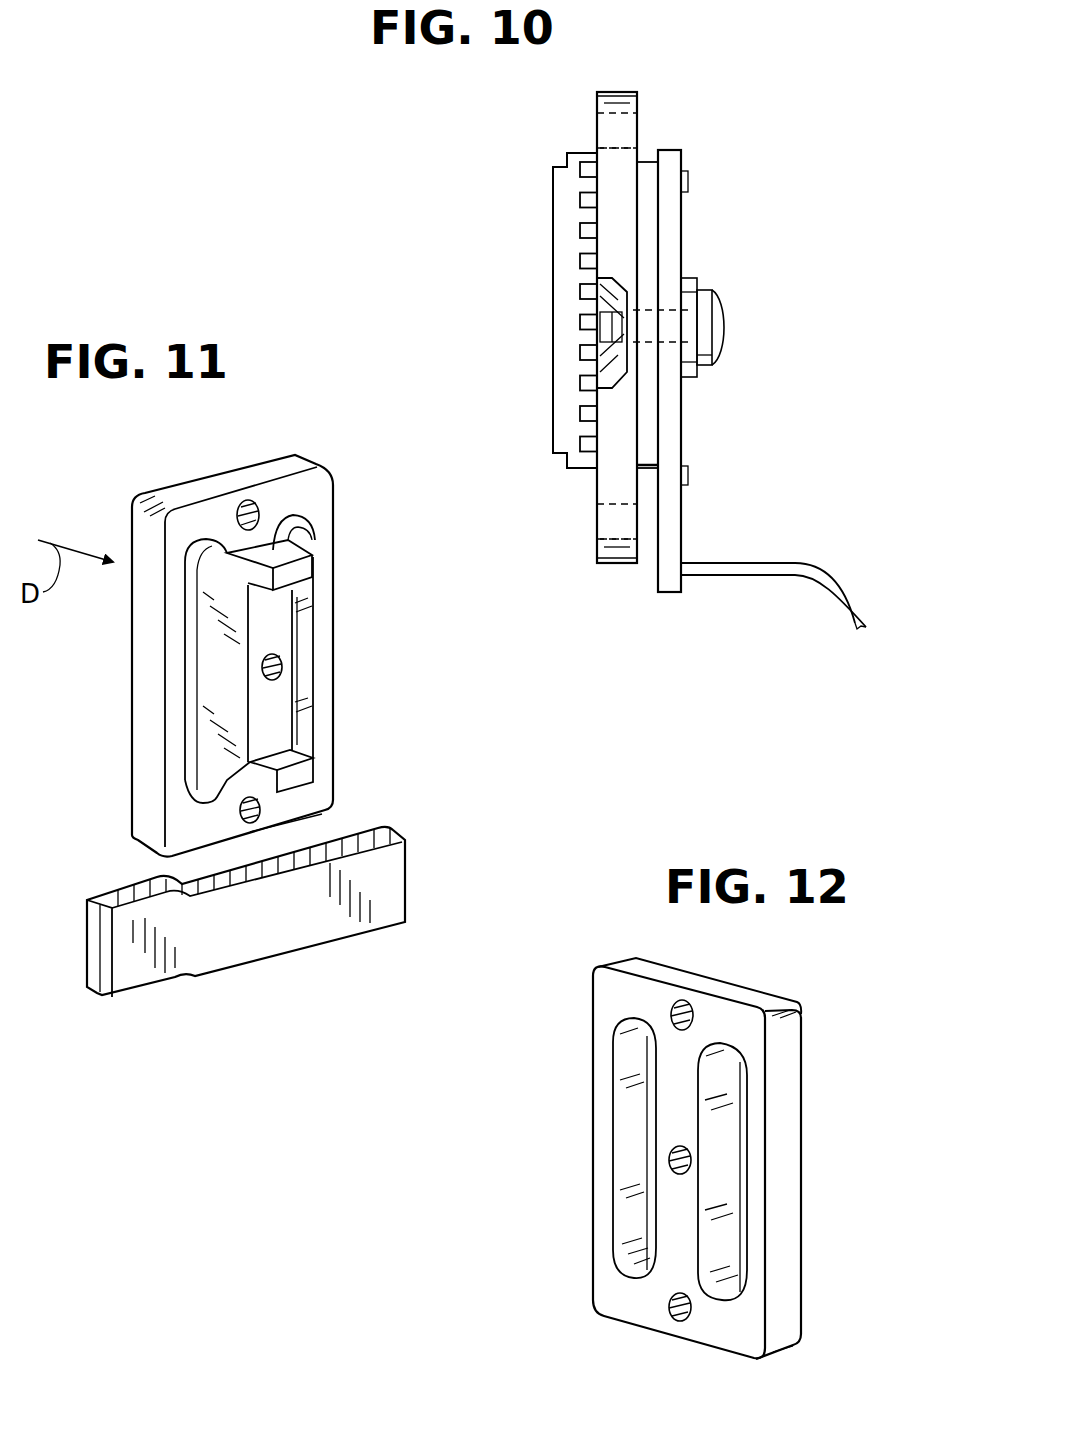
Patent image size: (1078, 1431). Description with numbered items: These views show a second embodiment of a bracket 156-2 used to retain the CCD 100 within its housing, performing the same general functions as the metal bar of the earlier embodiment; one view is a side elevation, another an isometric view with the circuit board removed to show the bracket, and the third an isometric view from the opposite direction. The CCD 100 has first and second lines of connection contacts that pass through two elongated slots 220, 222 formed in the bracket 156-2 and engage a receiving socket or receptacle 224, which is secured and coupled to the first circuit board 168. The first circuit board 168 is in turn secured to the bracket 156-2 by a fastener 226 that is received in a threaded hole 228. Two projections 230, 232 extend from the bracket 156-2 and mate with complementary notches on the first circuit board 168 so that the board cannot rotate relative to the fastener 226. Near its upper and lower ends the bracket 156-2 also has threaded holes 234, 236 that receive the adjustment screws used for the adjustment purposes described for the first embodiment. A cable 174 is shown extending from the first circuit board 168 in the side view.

In FIG. 10, the bracket 156-2 is at (643, 100).
In FIG. 11, the bracket 156-2 is at (150, 484).
In FIG. 12, the bracket 156-2 is at (592, 1049).
In FIG. 10, the CCD 100 is at (553, 262).
In FIG. 10, the first circuit board 168 is at (672, 430).
In FIG. 11, the first circuit board 168 is at (257, 929).
In FIG. 10, the cable 174 is at (758, 563).
In FIG. 11, the elongated slot 220 is at (210, 663).
In FIG. 12, the elongated slot 220 is at (746, 1156).
In FIG. 11, the elongated slot 222 is at (300, 630).
In FIG. 12, the elongated slot 222 is at (639, 1212).
In FIG. 10, the receiving socket or receptacle 224 is at (645, 238).
In FIG. 10, the fastener 226 is at (716, 318).
In FIG. 10, the threaded hole 228 is at (598, 322).
In FIG. 11, the threaded hole 228 is at (272, 672).
In FIG. 12, the threaded hole 228 is at (676, 1148).
In FIG. 11, the projection 230 is at (283, 554).
In FIG. 11, the projection 232 is at (290, 757).
In FIG. 10, the threaded hole 234 is at (616, 147).
In FIG. 10, the threaded hole 236 is at (616, 538).